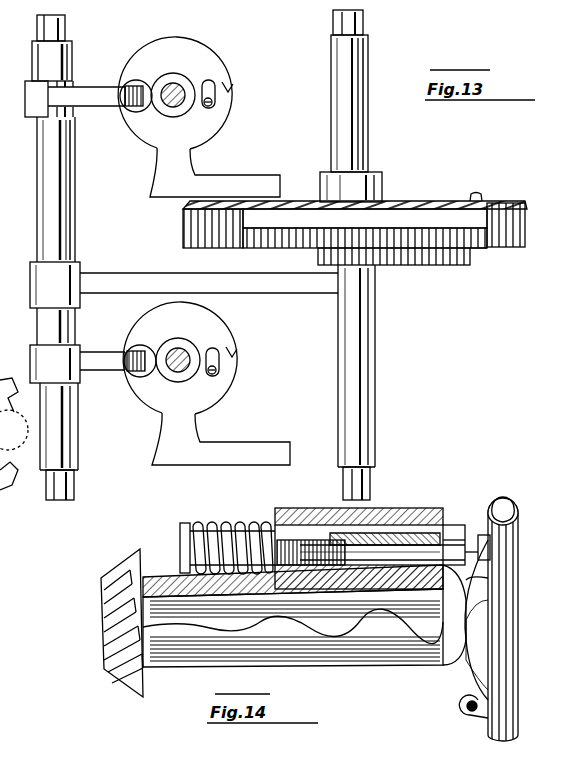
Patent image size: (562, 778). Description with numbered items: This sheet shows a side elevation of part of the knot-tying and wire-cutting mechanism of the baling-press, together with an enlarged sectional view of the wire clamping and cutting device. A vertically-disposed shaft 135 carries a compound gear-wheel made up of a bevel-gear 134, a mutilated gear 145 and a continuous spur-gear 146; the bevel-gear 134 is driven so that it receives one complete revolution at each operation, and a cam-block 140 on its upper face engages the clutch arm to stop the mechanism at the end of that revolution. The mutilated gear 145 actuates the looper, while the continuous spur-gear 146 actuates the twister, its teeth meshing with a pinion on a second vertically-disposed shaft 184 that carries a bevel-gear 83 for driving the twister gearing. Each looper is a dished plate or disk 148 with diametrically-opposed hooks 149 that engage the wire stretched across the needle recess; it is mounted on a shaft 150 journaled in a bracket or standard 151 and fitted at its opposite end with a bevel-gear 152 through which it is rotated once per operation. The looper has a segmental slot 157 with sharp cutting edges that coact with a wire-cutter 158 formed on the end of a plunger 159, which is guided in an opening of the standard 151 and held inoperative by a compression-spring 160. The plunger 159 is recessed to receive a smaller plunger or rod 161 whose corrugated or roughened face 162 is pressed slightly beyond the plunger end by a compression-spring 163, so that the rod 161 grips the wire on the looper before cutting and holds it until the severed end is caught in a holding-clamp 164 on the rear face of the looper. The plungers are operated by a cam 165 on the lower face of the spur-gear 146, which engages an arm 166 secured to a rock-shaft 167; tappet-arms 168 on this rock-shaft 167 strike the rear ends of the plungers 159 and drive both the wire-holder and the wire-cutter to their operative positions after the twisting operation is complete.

In FIG. 13, the bevel-gear 83 is at (10, 492).
In FIG. 13, the bevel-gear 134 is at (420, 203).
In FIG. 13, the vertically-disposed shaft 135 is at (370, 347).
In FIG. 13, the cam-block 140 is at (477, 195).
In FIG. 13, the mutilated gear 145 is at (505, 203).
In FIG. 13, the continuous spur-gear 146 is at (495, 250).
In FIG. 13, the dished plate or disk 148 is at (208, 133).
In FIG. 14, the dished plate or disk 148 is at (505, 596).
In FIG. 13, the hooks 149 is at (229, 90).
In FIG. 14, the hooks 149 is at (519, 503).
In FIG. 14, the shaft 150 is at (410, 610).
In FIG. 13, the bracket or standard 151 is at (165, 177).
In FIG. 14, the bevel-gear 152 is at (104, 656).
In FIG. 14, the segmental slot 157 is at (492, 540).
In FIG. 14, the wire-cutter 158 is at (458, 527).
In FIG. 13, the plunger 159 is at (130, 80).
In FIG. 14, the plunger 159 is at (290, 520).
In FIG. 14, the compression-spring 160 is at (234, 522).
In FIG. 14, the plunger or rod 161 is at (410, 528).
In FIG. 14, the corrugated or roughened face 162 is at (480, 553).
In FIG. 14, the compression-spring 163 is at (340, 545).
In FIG. 13, the holding-clamp 164 is at (212, 92).
In FIG. 14, the holding-clamp 164 is at (466, 705).
In FIG. 13, the cam 165 is at (447, 265).
In FIG. 13, the arm 166 is at (140, 280).
In FIG. 13, the rock-shaft 167 is at (42, 233).
In FIG. 13, the tappet-arms 168 is at (98, 90).
In FIG. 13, the vertically-disposed shaft 184 is at (6, 444).